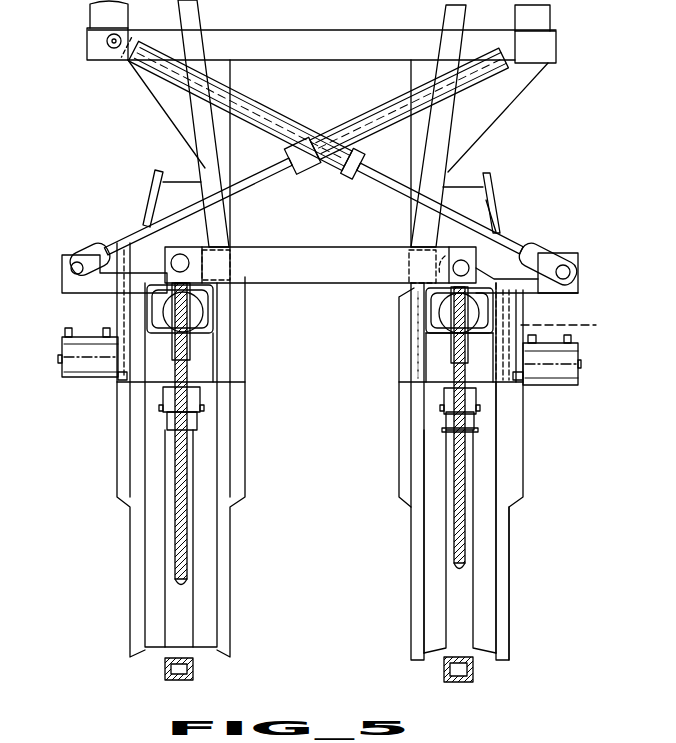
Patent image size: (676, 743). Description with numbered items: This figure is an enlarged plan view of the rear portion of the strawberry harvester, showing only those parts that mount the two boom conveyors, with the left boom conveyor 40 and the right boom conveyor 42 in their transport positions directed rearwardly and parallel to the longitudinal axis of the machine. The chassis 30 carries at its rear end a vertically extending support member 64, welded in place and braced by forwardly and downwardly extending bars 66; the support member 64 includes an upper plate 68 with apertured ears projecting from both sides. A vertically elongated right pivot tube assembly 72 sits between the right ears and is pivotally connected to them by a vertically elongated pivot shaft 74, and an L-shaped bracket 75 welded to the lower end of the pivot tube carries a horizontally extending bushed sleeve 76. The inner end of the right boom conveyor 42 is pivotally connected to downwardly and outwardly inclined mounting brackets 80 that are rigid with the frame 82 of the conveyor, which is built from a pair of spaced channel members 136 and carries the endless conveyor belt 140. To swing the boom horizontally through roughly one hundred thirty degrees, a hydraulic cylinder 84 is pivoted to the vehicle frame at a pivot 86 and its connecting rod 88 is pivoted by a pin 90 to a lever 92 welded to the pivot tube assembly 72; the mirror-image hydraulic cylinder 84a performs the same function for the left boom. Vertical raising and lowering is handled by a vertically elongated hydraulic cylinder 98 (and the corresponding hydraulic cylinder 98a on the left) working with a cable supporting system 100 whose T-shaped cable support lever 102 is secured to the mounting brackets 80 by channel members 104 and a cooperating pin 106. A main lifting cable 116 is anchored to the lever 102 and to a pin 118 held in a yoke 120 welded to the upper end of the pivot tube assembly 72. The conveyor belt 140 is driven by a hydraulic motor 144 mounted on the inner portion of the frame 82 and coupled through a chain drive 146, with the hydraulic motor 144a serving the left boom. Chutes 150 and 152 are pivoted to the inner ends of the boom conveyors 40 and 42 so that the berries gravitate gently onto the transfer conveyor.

The chassis 30 is at (318, 22).
The left boom conveyor 40 is at (300, 461).
The right boom conveyor 42 is at (499, 481).
The support member 64 is at (322, 247).
The bars 66 is at (205, 145).
The upper plate 68 is at (262, 245).
The right pivot tube assembly 72 is at (492, 228).
The pivot shaft 74 is at (443, 268).
The bracket 75 is at (498, 316).
The bushed sleeve 76 is at (500, 249).
The mounting brackets 80 is at (402, 428).
The frame 82 is at (527, 562).
The hydraulic cylinder 84 is at (243, 98).
The hydraulic cylinder 84a is at (362, 112).
The pivot 86 is at (106, 42).
The connecting rod 88 is at (393, 197).
The pin 90 is at (572, 272).
The lever 92 is at (570, 292).
The hydraulic cylinder 98 is at (445, 318).
The hydraulic cylinder 98a is at (198, 312).
The cable supporting system 100 is at (438, 522).
The cable support lever 102 is at (462, 618).
The channel members 104 is at (450, 400).
The pin 106 is at (478, 418).
The main lifting cable 116 is at (458, 543).
The pin 118 is at (440, 298).
The yoke 120 is at (445, 345).
The channel members 136 is at (415, 596).
The conveyor belt 140 is at (432, 562).
The hydraulic motor 144 is at (568, 354).
The hydraulic motor 144a is at (108, 385).
The chain drive 146 is at (582, 333).
The chute 150 is at (150, 186).
The chute 152 is at (460, 185).